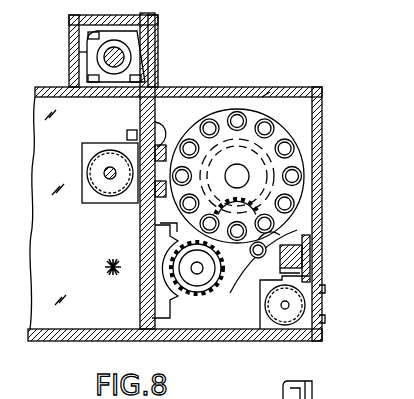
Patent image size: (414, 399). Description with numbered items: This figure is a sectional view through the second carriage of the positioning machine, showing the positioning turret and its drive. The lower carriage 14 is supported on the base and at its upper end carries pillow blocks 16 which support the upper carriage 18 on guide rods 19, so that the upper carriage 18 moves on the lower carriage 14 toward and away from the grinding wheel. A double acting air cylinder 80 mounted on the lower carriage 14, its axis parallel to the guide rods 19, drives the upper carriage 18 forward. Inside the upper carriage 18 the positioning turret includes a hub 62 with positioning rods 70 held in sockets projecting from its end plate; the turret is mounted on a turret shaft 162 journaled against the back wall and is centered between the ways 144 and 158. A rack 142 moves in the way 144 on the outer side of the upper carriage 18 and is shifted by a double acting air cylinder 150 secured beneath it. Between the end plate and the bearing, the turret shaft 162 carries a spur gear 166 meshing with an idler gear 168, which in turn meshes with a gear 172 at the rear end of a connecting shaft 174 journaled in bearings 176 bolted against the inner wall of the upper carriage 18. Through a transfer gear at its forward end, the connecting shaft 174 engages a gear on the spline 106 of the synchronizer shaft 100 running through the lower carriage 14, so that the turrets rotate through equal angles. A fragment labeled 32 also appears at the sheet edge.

The lower carriage 14 is at (95, 348).
The pillow blocks 16 is at (137, 43).
The upper carriage 18 is at (216, 78).
The guide rods 19 is at (124, 60).
The connector fragment 32 is at (325, 392).
The hub 62 is at (240, 172).
The positioning rods 70 is at (233, 111).
The double acting air cylinder 80 is at (86, 171).
The synchronizer shaft 100 is at (103, 270).
The spline 106 is at (300, 119).
The rack 142 is at (252, 260).
The way 144 is at (297, 270).
The double acting air cylinder 150 is at (305, 305).
The way 158 is at (148, 118).
The turret shaft 162 is at (246, 174).
The spur gear 166 is at (262, 97).
The idler gear 168 is at (288, 243).
The gear 172 is at (203, 292).
The connecting shaft 174 is at (198, 268).
The bearings 176 is at (167, 228).